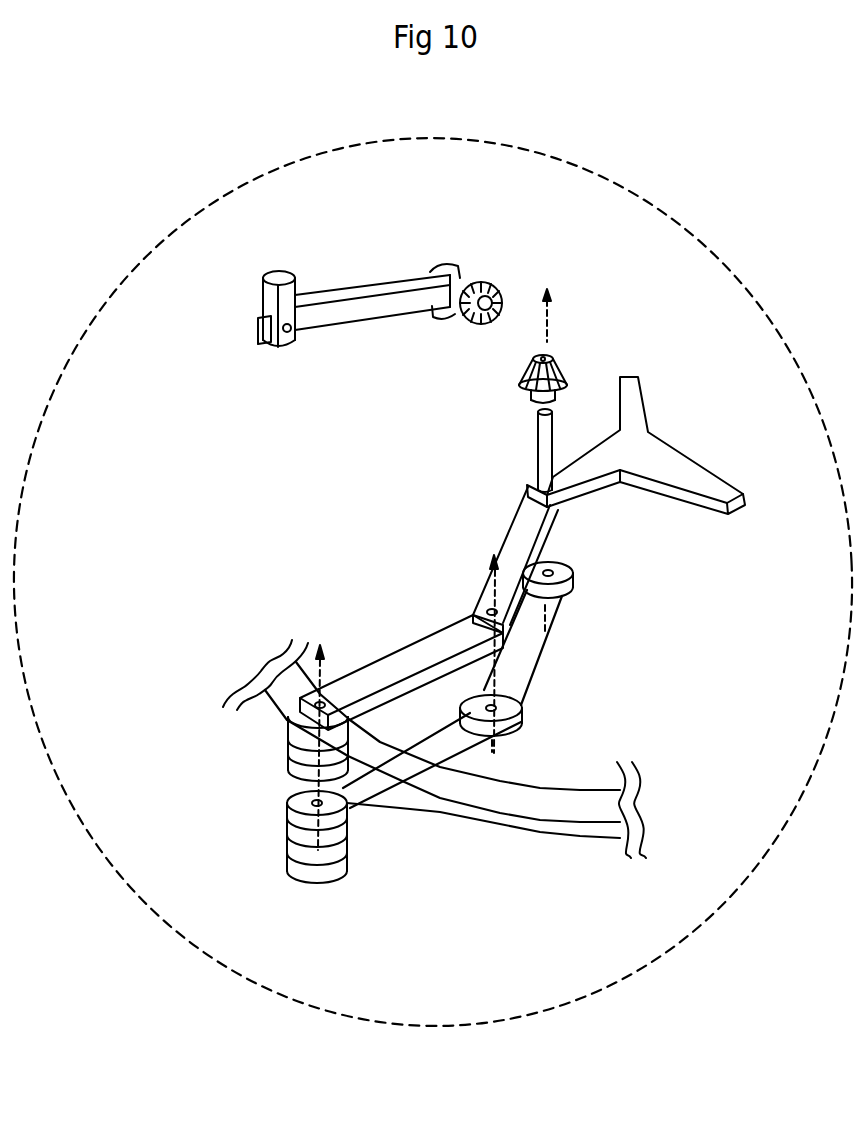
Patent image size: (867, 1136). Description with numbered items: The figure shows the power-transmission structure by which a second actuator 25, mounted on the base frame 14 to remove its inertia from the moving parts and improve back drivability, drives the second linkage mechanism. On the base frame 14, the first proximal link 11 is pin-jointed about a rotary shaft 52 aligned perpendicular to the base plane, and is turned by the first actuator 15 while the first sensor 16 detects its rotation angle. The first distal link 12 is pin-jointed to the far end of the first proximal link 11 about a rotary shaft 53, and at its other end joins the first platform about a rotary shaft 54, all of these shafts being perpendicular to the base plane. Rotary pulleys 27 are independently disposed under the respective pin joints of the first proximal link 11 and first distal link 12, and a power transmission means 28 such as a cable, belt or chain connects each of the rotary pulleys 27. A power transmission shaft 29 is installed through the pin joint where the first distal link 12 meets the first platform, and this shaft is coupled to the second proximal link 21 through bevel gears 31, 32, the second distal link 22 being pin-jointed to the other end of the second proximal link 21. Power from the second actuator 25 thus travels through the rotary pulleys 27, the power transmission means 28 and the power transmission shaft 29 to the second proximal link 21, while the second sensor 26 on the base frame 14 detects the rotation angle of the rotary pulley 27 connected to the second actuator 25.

The first proximal link 11 is at (412, 658).
The first distal link 12 is at (528, 530).
The base frame 14 is at (647, 453).
The first actuator 15 is at (293, 747).
The first sensor 16 is at (295, 772).
The second proximal link 21 is at (373, 286).
The second distal link 22 is at (270, 280).
The second actuator 25 is at (298, 858).
The second sensor 26 is at (300, 880).
The rotary pulley 27 is at (573, 584).
The power transmission means 28 is at (548, 655).
The power transmission shaft 29 is at (552, 415).
The bevel gear 31 is at (522, 383).
The bevel gear 32 is at (487, 278).
The rotary shaft 52 is at (320, 650).
The rotary shaft 53 is at (493, 555).
The rotary shaft 54 is at (549, 292).